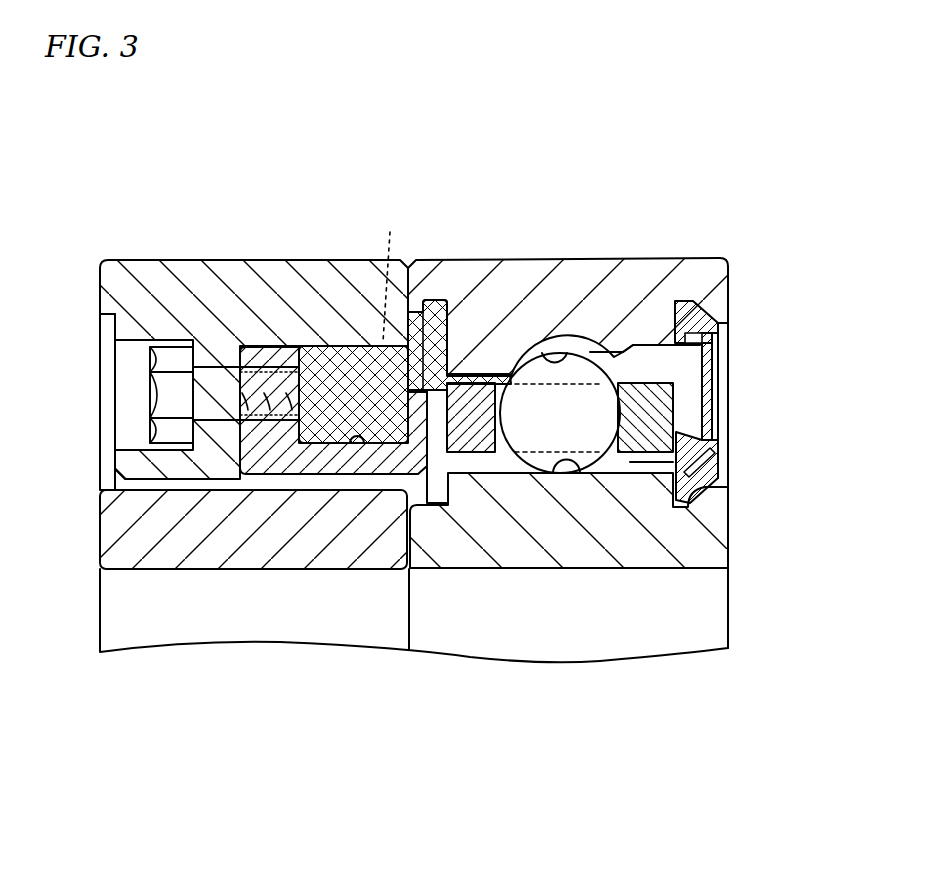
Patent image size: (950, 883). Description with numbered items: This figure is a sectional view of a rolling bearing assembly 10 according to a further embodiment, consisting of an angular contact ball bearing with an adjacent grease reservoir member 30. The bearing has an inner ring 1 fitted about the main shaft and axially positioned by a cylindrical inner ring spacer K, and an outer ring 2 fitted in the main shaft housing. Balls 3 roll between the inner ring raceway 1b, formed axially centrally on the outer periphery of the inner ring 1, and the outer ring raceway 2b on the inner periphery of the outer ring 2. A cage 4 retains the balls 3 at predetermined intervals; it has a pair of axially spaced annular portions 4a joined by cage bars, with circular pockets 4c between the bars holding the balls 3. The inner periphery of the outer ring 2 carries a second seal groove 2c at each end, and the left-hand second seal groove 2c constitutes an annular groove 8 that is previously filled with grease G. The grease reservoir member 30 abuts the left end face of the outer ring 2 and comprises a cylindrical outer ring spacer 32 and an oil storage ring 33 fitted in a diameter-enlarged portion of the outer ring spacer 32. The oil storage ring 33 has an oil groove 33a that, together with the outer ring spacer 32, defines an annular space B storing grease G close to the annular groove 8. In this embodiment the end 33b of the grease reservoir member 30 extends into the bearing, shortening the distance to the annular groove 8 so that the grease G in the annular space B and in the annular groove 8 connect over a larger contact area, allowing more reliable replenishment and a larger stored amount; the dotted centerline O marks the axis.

The outer ring spacer 32 is at (187, 283).
The outer ring 2 is at (663, 283).
The annular groove 8 is at (459, 288).
The second seal groove 2c is at (452, 311).
The end of grease reservoir member 33b is at (416, 396).
The annular space B is at (330, 382).
The grease G is at (364, 380).
The axis line O is at (386, 276).
The oil storage ring 33 is at (312, 464).
The oil groove 33a is at (369, 447).
The grease reservoir member 30 is at (266, 462).
The ball 3 is at (588, 372).
The outer ring raceway 2b is at (574, 350).
The annular portion 4a is at (476, 403).
The cage 4 is at (653, 381).
The pocket 4c is at (634, 344).
The inner ring 1 is at (484, 540).
The inner ring raceway 1b is at (552, 474).
The inner ring spacer K is at (116, 540).
The rolling bearing assembly 10 is at (523, 606).